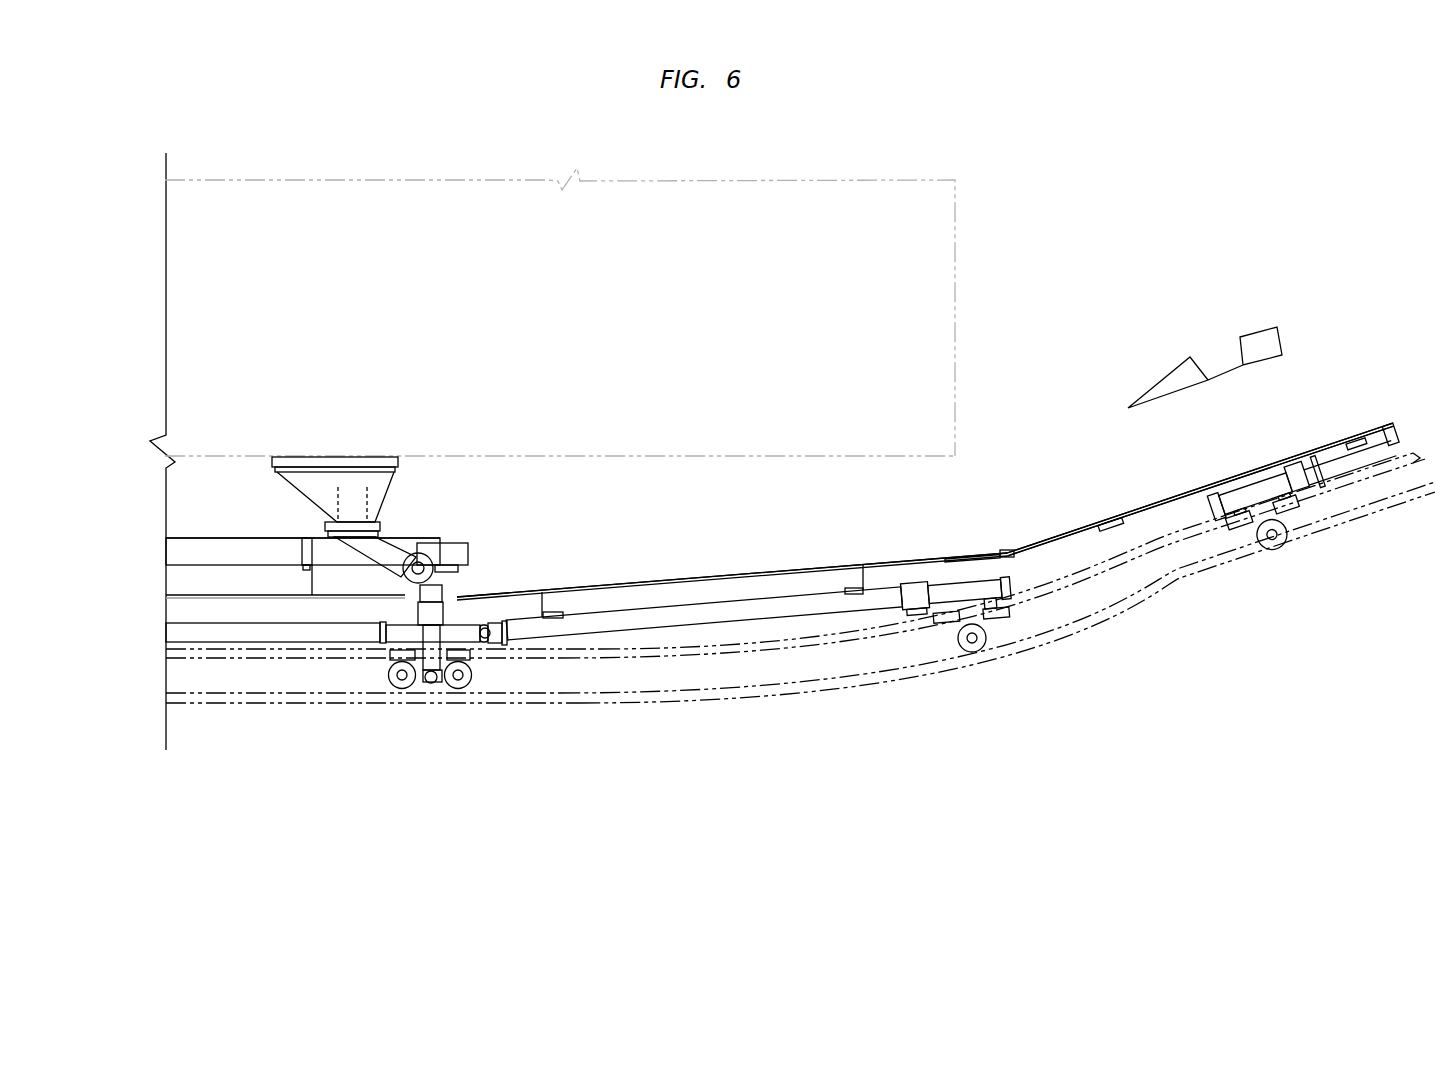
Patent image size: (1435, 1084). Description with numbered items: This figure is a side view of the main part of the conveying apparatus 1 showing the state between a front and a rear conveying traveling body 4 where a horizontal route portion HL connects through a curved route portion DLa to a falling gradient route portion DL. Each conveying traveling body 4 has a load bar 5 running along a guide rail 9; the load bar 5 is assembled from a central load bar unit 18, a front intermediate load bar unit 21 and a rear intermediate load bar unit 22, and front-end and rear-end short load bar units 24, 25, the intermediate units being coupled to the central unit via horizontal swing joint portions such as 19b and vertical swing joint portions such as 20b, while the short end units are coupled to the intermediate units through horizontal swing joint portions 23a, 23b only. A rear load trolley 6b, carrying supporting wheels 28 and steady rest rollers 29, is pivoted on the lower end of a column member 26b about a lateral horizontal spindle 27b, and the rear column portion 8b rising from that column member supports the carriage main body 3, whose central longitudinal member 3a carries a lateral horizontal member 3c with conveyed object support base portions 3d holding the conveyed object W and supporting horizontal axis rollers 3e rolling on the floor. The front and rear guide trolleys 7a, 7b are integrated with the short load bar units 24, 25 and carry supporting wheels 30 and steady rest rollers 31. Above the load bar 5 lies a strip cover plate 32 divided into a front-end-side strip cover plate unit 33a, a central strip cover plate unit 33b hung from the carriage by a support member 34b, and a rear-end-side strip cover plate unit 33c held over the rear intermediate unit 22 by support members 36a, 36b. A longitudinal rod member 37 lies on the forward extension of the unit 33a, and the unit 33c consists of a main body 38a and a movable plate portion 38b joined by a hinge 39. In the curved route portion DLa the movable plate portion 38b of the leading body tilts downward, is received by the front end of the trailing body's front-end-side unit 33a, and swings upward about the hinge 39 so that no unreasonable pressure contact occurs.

The conveyed object W is at (818, 200).
The conveying apparatus 1 is at (463, 520).
The carriage main body 3 is at (237, 535).
The central longitudinal member 3a is at (195, 545).
The right-left lateral horizontal member 3c is at (354, 500).
The conveyed object support base portion 3d is at (313, 457).
The supporting horizontal axis roller 3e is at (403, 560).
The conveying traveling body 4 is at (617, 601).
The load bar 5 is at (738, 598).
The rear load trolley 6b is at (441, 690).
The front guide trolley 7a is at (1265, 489).
The rear guide trolley 7b is at (970, 591).
The rear column portion 8b is at (463, 565).
The guide rail 9 is at (218, 677).
The central load bar unit 18 is at (190, 632).
The horizontal swing joint portion 19b is at (425, 609).
The vertical swing joint portion 20b is at (517, 640).
The front intermediate load bar unit 21 is at (1390, 434).
The rear intermediate load bar unit 22 is at (702, 580).
The horizontal swing joint portion 23a is at (1349, 457).
The horizontal swing joint portion 23b is at (917, 612).
The front-end short load bar unit 24 is at (1265, 489).
The rear-end short load bar unit 25 is at (970, 591).
The column member 26b is at (432, 653).
The right-left lateral horizontal spindle 27b is at (430, 684).
The supporting wheel 28 is at (402, 690).
The steady rest roller 29 is at (390, 655).
The supporting wheel 30 is at (972, 655).
The steady rest roller 31 is at (955, 600).
The strip cover plate 32 is at (648, 576).
The front-end-side strip cover plate unit 33a is at (1295, 457).
The central strip cover plate unit 33b is at (268, 590).
The rear-end-side strip cover plate unit 33c is at (795, 562).
The support member 34b is at (312, 585).
The support member 36a is at (545, 600).
The support member 36b is at (865, 583).
The longitudinal rod member 37 is at (1102, 522).
The main body 38a is at (952, 560).
The movable plate portion 38b is at (1111, 525).
The hinge 39 is at (1007, 553).
The horizontal route portion HL is at (275, 680).
The falling gradient route portion DL is at (1232, 585).
The curved route portion DLa is at (930, 655).